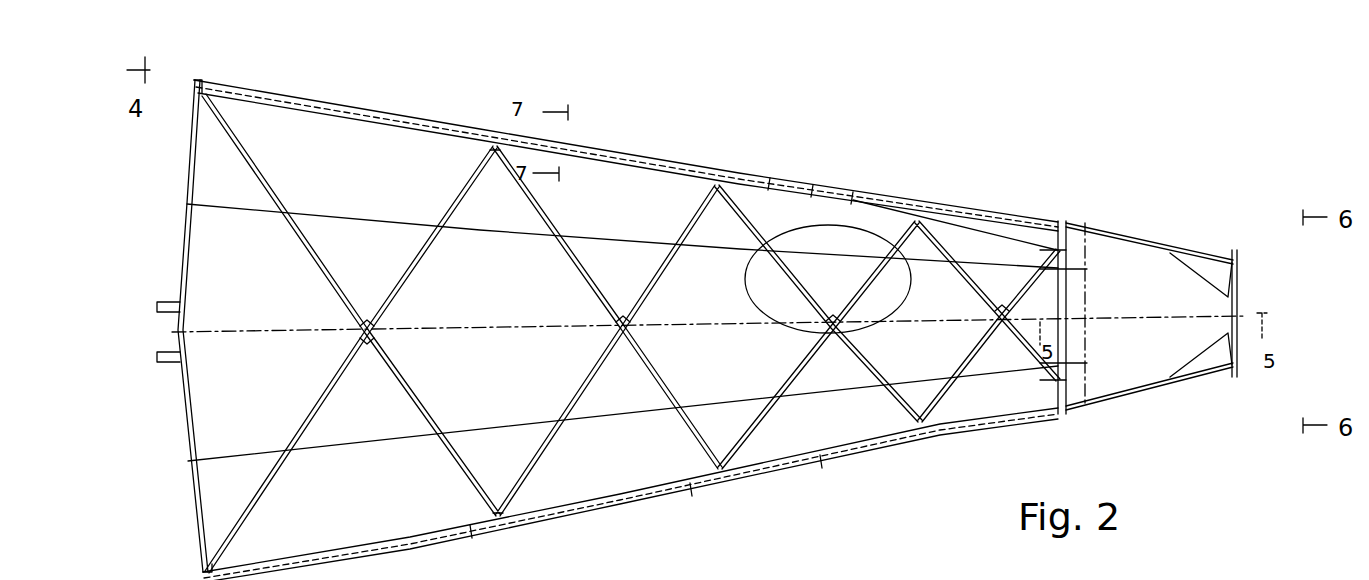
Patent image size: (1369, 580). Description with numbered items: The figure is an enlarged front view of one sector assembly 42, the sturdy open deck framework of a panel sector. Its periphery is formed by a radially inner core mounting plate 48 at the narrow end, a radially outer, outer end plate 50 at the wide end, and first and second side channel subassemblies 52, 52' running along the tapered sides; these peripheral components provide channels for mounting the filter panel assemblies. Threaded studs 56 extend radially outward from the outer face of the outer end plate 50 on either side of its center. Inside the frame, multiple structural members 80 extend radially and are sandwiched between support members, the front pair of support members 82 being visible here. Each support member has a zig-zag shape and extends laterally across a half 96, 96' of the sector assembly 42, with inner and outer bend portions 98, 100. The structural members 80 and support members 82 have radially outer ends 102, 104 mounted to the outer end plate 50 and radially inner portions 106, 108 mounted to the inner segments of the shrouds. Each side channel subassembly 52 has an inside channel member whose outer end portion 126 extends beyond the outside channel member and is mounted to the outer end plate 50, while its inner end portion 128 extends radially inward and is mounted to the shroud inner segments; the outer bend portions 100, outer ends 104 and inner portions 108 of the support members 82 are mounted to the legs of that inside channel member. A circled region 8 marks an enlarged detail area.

The sector assembly 42 is at (1053, 109).
The core mounting plate 48 is at (1240, 268).
The outer end plate 50 is at (186, 406).
The first side channel subassembly 52 is at (626, 165).
The second side channel subassembly 52' is at (631, 497).
The threaded stud 56 is at (178, 301).
The detail region 8 is at (749, 285).
The structural member 80 is at (380, 222).
The front pair of support members 82 is at (678, 398).
The half of the sector assembly 96 is at (628, 155).
The half of the sector assembly 96' is at (630, 494).
The inner bend portion 98 is at (366, 319).
The outer bend portion 100 is at (494, 152).
The radially outer end of structural member 102 is at (187, 204).
The radially outer end of support member 104 is at (208, 568).
The radially inner portion of structural member 106 is at (1080, 272).
The radially inner portion of support member 108 is at (1082, 360).
The outer end portion of inside channel member 126 is at (194, 78).
The inner end portion of inside channel member 128 is at (1063, 222).